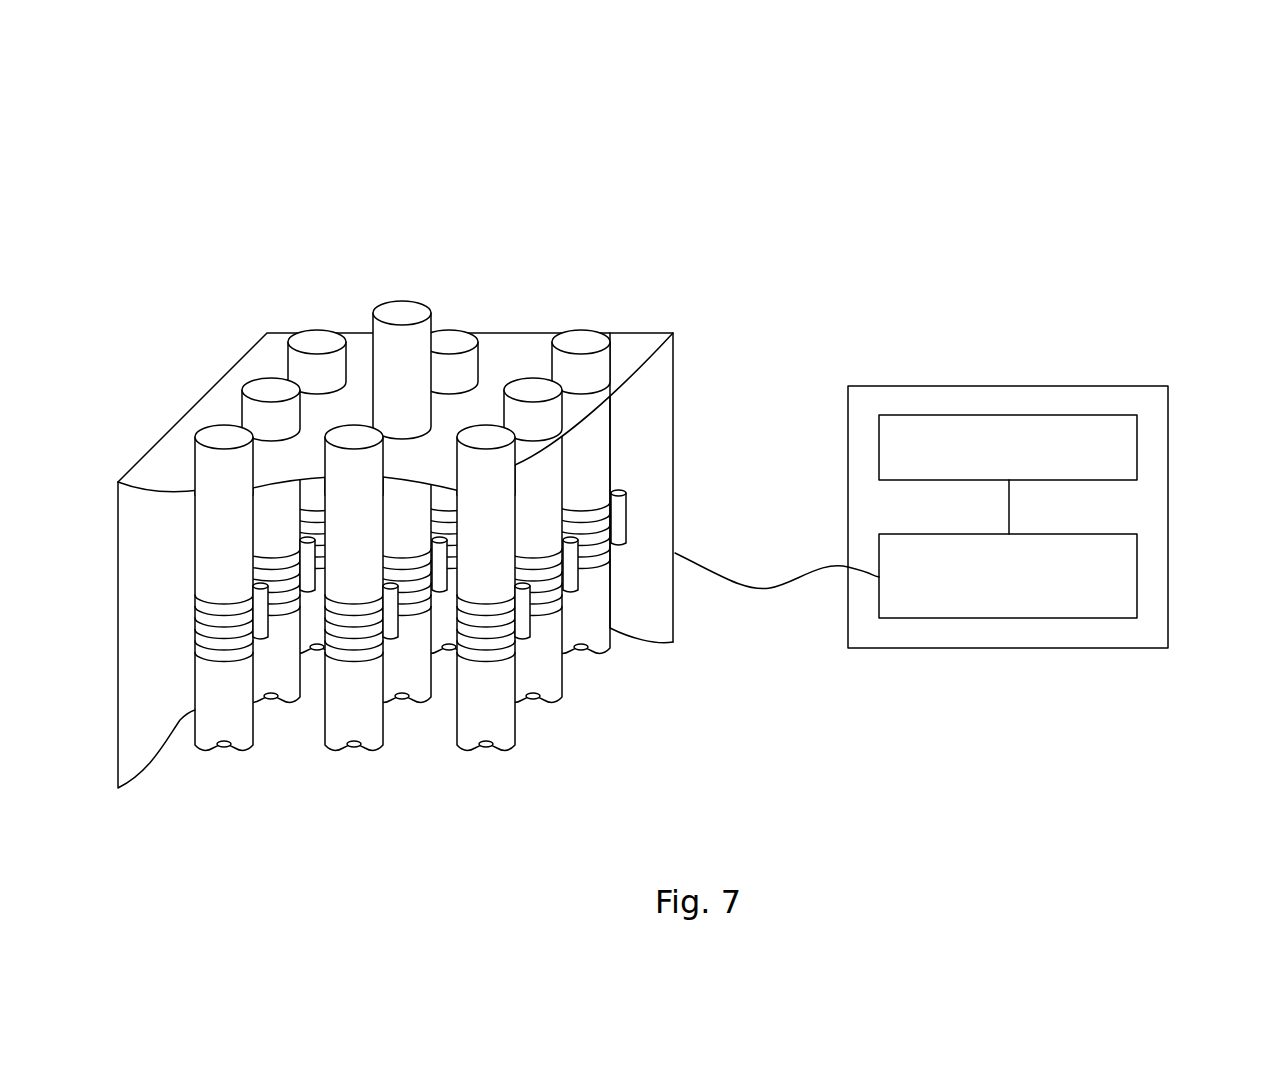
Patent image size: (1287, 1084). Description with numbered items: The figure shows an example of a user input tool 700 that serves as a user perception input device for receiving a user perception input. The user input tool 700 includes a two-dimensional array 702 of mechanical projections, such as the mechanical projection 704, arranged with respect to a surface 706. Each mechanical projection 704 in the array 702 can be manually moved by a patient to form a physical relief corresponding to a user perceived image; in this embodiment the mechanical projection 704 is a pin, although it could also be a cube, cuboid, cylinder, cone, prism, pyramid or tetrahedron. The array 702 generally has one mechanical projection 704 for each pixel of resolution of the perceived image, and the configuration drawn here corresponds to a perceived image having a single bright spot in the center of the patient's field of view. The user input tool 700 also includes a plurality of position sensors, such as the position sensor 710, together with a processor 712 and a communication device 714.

The user input tool 700 is at (692, 474).
The two-dimensional array 702 is at (520, 792).
The mechanical projection 704 is at (382, 305).
The surface 706 is at (240, 365).
The position sensor 710 is at (621, 492).
The processor 712 is at (1137, 472).
The communication device 714 is at (1137, 592).